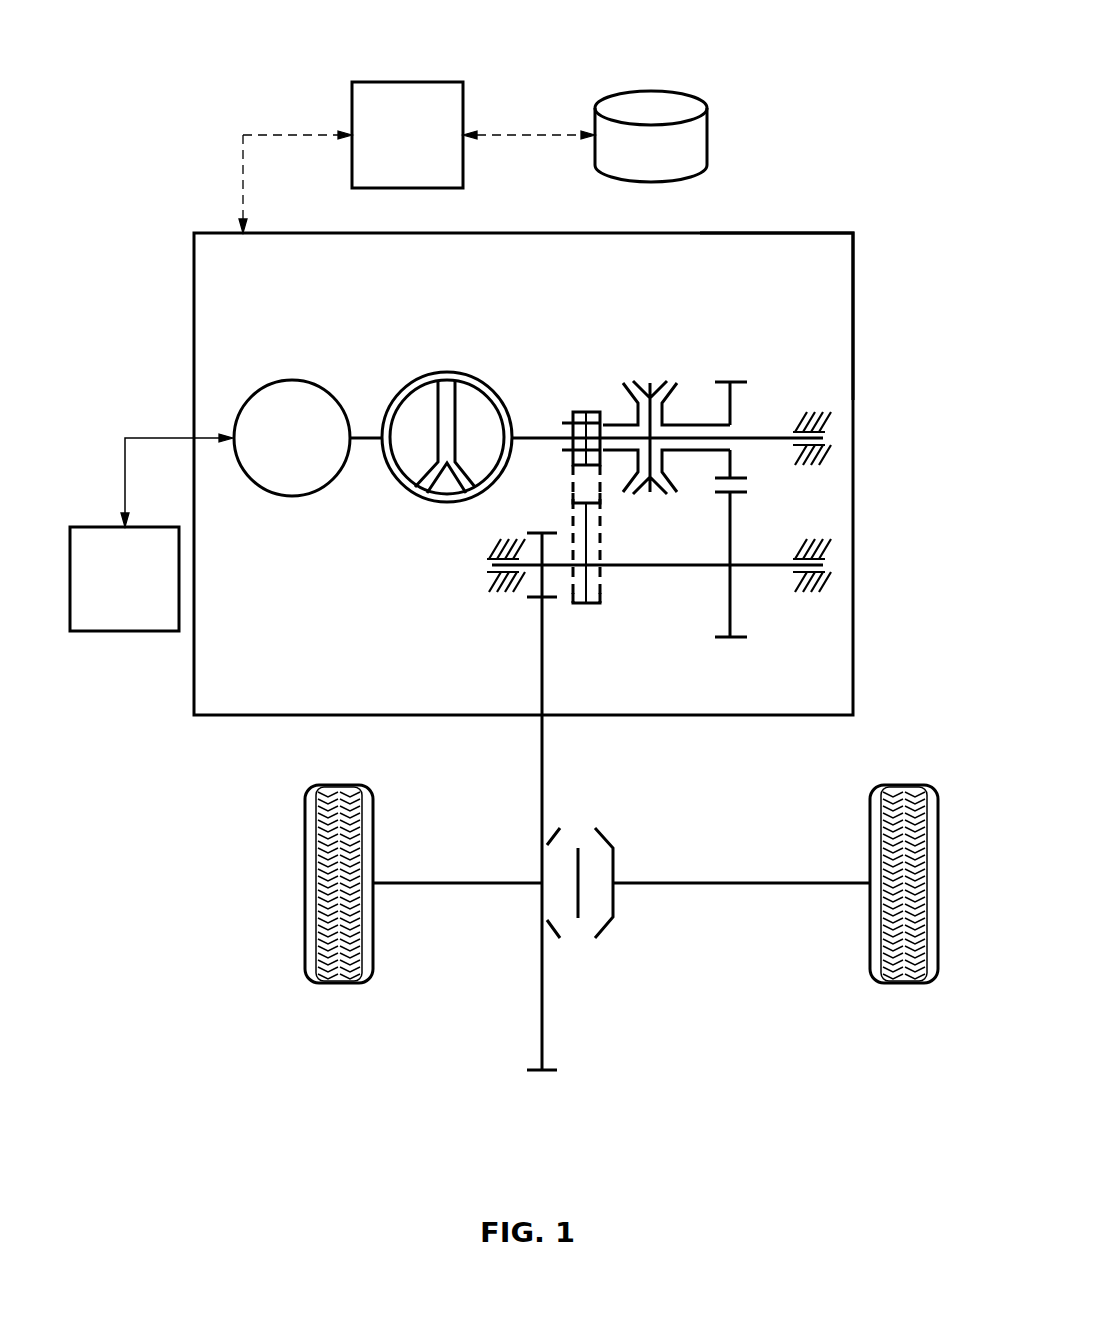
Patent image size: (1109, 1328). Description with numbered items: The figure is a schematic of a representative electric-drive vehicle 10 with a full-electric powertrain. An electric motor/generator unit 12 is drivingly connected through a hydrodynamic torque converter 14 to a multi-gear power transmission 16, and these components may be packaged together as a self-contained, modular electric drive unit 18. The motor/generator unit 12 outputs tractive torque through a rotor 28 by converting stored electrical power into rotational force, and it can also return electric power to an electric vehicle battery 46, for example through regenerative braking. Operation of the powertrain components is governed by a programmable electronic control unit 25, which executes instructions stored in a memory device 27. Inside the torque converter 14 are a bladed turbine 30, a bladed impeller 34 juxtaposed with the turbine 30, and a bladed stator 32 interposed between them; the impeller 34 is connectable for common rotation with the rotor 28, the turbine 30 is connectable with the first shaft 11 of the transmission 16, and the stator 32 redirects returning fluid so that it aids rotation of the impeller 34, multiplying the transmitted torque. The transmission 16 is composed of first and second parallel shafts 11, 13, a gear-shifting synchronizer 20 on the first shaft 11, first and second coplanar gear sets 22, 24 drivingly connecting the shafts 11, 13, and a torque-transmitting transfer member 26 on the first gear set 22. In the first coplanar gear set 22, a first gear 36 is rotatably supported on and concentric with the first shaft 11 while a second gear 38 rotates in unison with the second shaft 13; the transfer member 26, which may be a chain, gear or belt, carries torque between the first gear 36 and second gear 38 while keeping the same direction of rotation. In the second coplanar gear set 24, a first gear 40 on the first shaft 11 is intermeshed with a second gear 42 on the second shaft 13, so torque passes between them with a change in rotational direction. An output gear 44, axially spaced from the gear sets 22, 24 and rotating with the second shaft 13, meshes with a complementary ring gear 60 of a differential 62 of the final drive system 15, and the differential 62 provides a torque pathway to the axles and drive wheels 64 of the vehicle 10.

The electric-drive vehicle 10 is at (850, 140).
The first shaft 11 is at (752, 440).
The electric motor/generator unit 12 is at (263, 388).
The second shaft 13 is at (752, 567).
The hydrodynamic torque converter 14 is at (450, 402).
The final drive system 15 is at (738, 1062).
The multi-gear power transmission 16 is at (800, 265).
The modular electric drive unit 18 is at (870, 328).
The gear-shifting synchronizer 20 is at (658, 383).
The first coplanar gear set 22 is at (574, 362).
The second coplanar gear set 24 is at (731, 360).
The electronic control unit 25 is at (368, 80).
The transfer member 26 is at (625, 567).
The memory device 27 is at (609, 92).
The rotor 28 is at (365, 437).
The bladed turbine 30 is at (498, 475).
The bladed stator 32 is at (445, 502).
The bladed impeller 34 is at (395, 475).
The first gear of first coplanar gear set 36 is at (594, 410).
The second gear of first coplanar gear set 38 is at (586, 603).
The first gear of second coplanar gear set 40 is at (735, 397).
The second gear of second coplanar gear set 42 is at (748, 637).
The output gear 44 is at (540, 582).
The electric vehicle battery 46 is at (85, 525).
The ring gear 60 is at (542, 1032).
The differential 62 is at (585, 950).
The drive wheels 64 is at (325, 983).